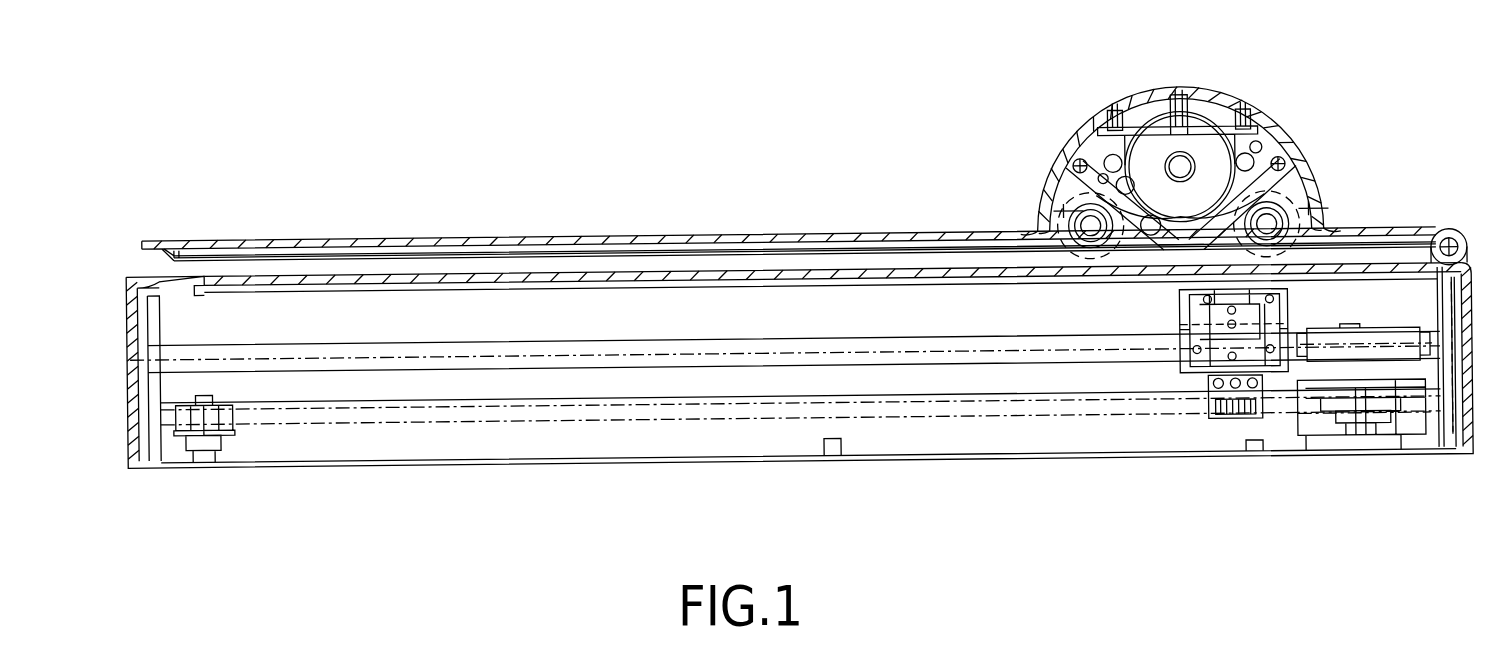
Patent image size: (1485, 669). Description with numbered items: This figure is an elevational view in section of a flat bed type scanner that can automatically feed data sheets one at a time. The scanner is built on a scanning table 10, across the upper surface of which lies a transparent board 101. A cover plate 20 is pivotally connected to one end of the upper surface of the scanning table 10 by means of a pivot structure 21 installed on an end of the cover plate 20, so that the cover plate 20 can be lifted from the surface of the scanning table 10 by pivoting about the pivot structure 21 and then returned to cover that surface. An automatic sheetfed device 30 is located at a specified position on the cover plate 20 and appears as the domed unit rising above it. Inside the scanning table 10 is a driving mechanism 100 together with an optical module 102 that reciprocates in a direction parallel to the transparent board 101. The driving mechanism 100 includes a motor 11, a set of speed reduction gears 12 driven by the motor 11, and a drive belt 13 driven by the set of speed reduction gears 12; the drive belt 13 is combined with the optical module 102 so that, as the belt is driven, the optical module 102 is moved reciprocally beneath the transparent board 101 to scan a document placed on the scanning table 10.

The scanning table 10 is at (940, 463).
The motor 11 is at (1423, 348).
The set of speed reduction gears 12 is at (1388, 345).
The drive belt 13 is at (492, 418).
The cover plate 20 is at (430, 236).
The pivot structure 21 is at (1450, 239).
The automatic sheetfed device 30 is at (1202, 94).
The driving mechanism 100 is at (1279, 452).
The transparent board 101 is at (607, 270).
The optical module 102 is at (1178, 322).